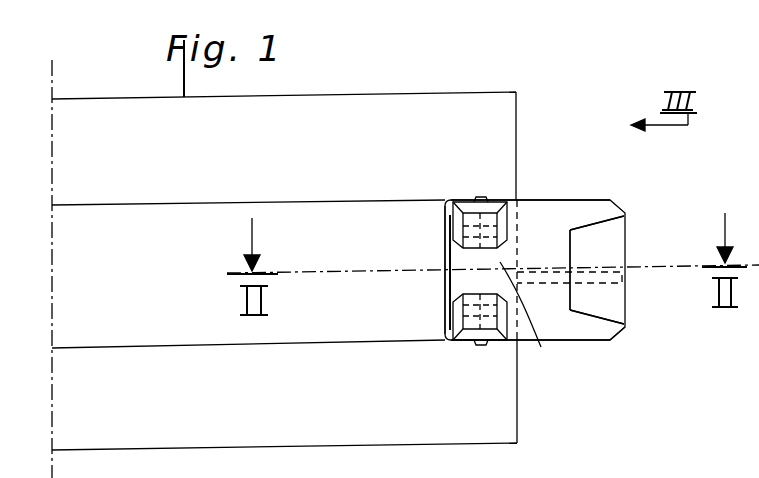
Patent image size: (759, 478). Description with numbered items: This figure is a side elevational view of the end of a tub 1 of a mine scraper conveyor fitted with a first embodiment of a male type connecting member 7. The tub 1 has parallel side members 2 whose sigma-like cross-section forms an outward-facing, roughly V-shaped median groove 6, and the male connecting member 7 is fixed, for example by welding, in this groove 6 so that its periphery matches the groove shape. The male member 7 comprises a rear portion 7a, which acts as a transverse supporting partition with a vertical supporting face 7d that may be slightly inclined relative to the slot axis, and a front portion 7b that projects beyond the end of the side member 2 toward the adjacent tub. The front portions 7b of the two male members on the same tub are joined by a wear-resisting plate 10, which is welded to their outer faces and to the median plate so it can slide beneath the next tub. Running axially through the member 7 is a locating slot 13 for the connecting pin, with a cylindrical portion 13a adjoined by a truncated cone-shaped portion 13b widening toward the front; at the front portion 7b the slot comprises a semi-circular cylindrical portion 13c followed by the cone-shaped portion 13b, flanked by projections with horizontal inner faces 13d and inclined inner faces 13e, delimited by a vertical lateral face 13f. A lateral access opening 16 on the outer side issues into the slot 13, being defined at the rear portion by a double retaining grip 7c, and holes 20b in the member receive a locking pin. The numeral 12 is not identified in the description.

The tub 1 is at (110, 92).
The side member 2 is at (285, 152).
The median groove 6 is at (94, 290).
The male connecting member 7 is at (602, 353).
The rear portion 7a is at (457, 200).
The front portion 7b is at (552, 195).
The double retaining grip 7c is at (456, 319).
The vertical supporting face 7d is at (443, 242).
The wear-resisting plate 10 is at (608, 265).
The screw 12 is at (583, 469).
The locating slot 13 is at (462, 266).
The cylindrical portion 13a is at (540, 319).
The truncated cone-shaped portion 13b is at (611, 301).
The cylindrical portion of semi-circular section 13c is at (566, 266).
The projections with horizontal inner faces 13d is at (538, 230).
The projections with inclined inner faces 13e is at (597, 312).
The vertical lateral face 13f is at (572, 330).
The lateral access opening 16 is at (487, 277).
The holes 20b is at (479, 197).